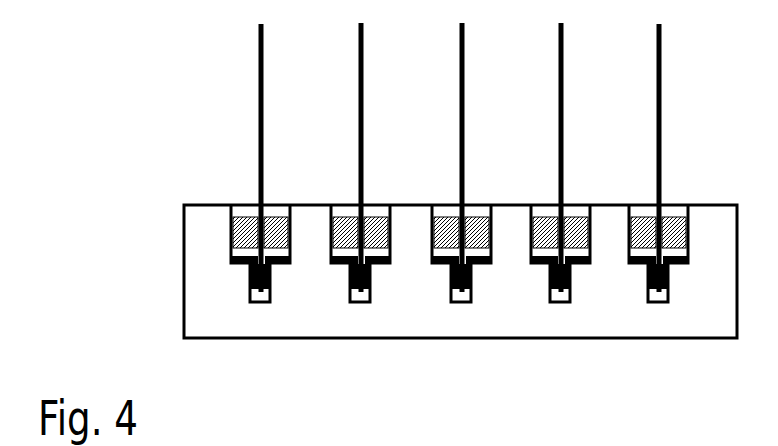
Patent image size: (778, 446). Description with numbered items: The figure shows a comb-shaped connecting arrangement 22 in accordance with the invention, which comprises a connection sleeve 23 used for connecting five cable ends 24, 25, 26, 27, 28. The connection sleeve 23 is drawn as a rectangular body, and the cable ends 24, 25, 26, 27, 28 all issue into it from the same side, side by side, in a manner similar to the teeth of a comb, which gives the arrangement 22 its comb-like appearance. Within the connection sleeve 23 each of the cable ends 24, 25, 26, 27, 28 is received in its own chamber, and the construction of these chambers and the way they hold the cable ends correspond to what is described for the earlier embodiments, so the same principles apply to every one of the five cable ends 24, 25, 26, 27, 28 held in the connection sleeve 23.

The comb-shaped connecting arrangement 22 is at (146, 184).
The connection sleeve 23 is at (200, 283).
The cable end 24 is at (258, 56).
The cable end 25 is at (358, 48).
The cable end 26 is at (459, 40).
The cable end 27 is at (558, 50).
The cable end 28 is at (656, 52).